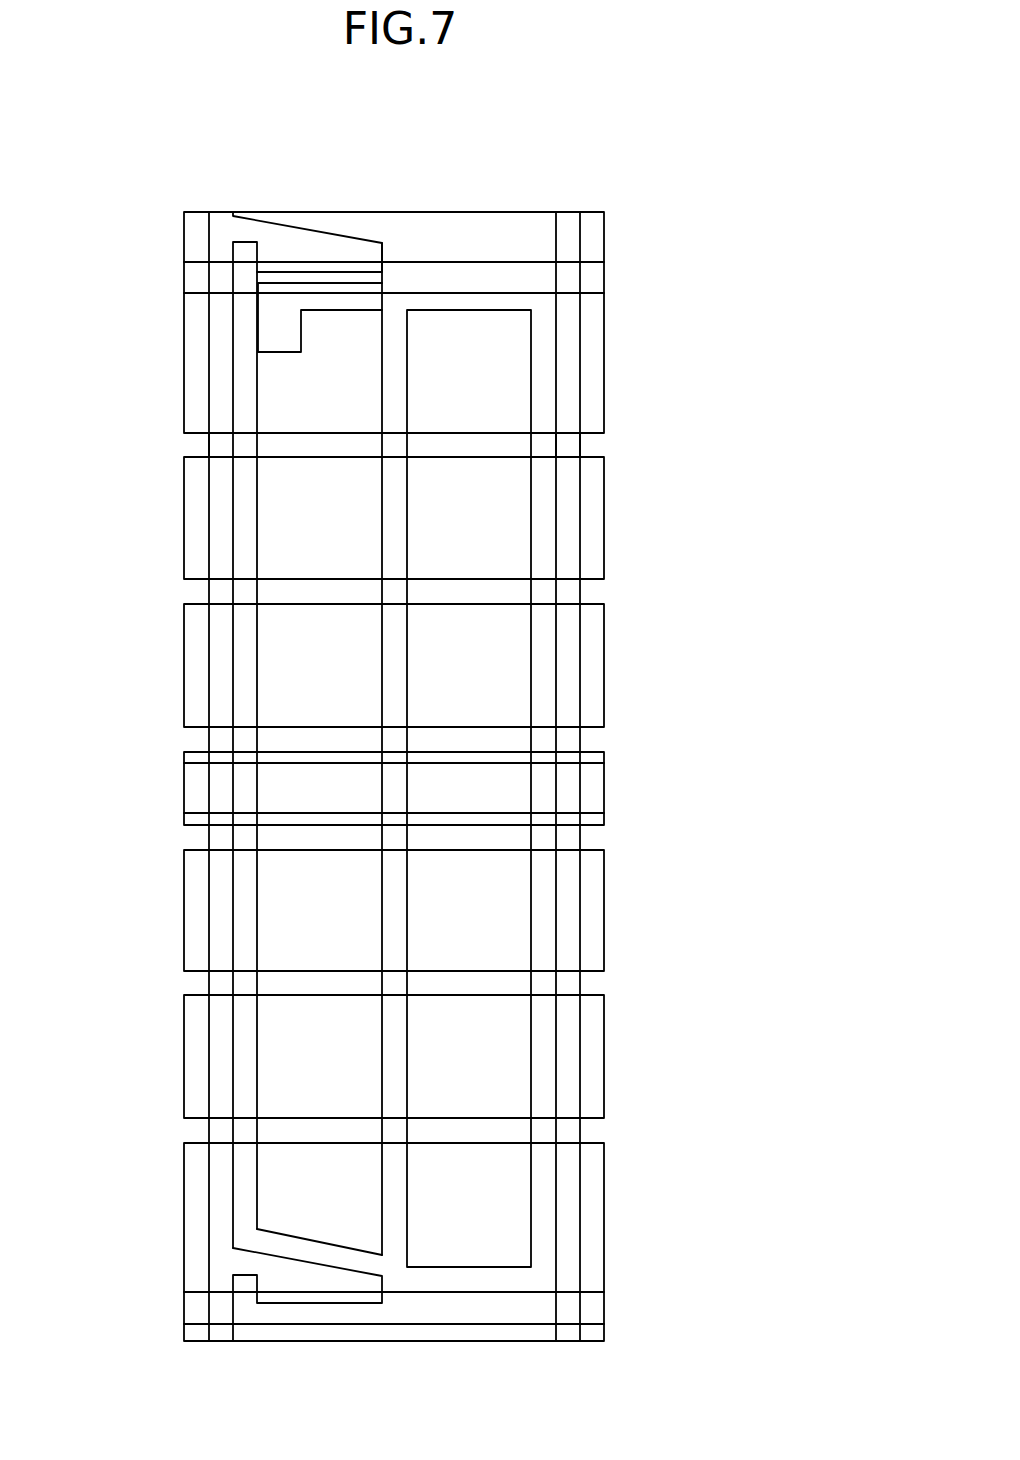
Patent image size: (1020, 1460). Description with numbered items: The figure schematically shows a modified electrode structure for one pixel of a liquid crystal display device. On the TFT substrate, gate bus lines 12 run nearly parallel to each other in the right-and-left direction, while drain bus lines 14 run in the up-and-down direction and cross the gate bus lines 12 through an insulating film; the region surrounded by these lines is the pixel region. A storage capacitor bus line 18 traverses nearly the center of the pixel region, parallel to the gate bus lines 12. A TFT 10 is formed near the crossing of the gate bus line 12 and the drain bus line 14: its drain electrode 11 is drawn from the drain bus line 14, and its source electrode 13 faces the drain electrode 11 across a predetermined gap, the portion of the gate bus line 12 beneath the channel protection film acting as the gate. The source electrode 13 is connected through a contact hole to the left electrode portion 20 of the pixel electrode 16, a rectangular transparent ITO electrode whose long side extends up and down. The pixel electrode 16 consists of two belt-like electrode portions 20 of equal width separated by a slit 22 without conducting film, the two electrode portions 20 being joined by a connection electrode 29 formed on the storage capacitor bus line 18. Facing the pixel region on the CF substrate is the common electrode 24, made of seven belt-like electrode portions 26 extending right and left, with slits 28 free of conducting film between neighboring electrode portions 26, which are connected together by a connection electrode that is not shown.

The TFT 10 is at (356, 181).
The drain electrode 11 is at (311, 232).
The gate bus line 12 is at (192, 277).
The source electrode 13 is at (377, 305).
The drain bus line 14 is at (221, 222).
The pixel electrode 16 is at (733, 320).
The storage capacitor bus line 18 is at (193, 787).
The electrode portion 20 is at (268, 383).
The slit 22 is at (400, 395).
The common electrode 24 is at (712, 432).
The electrode portion 26 is at (604, 306).
The slit 28 is at (602, 443).
The connection electrode 29 is at (395, 790).